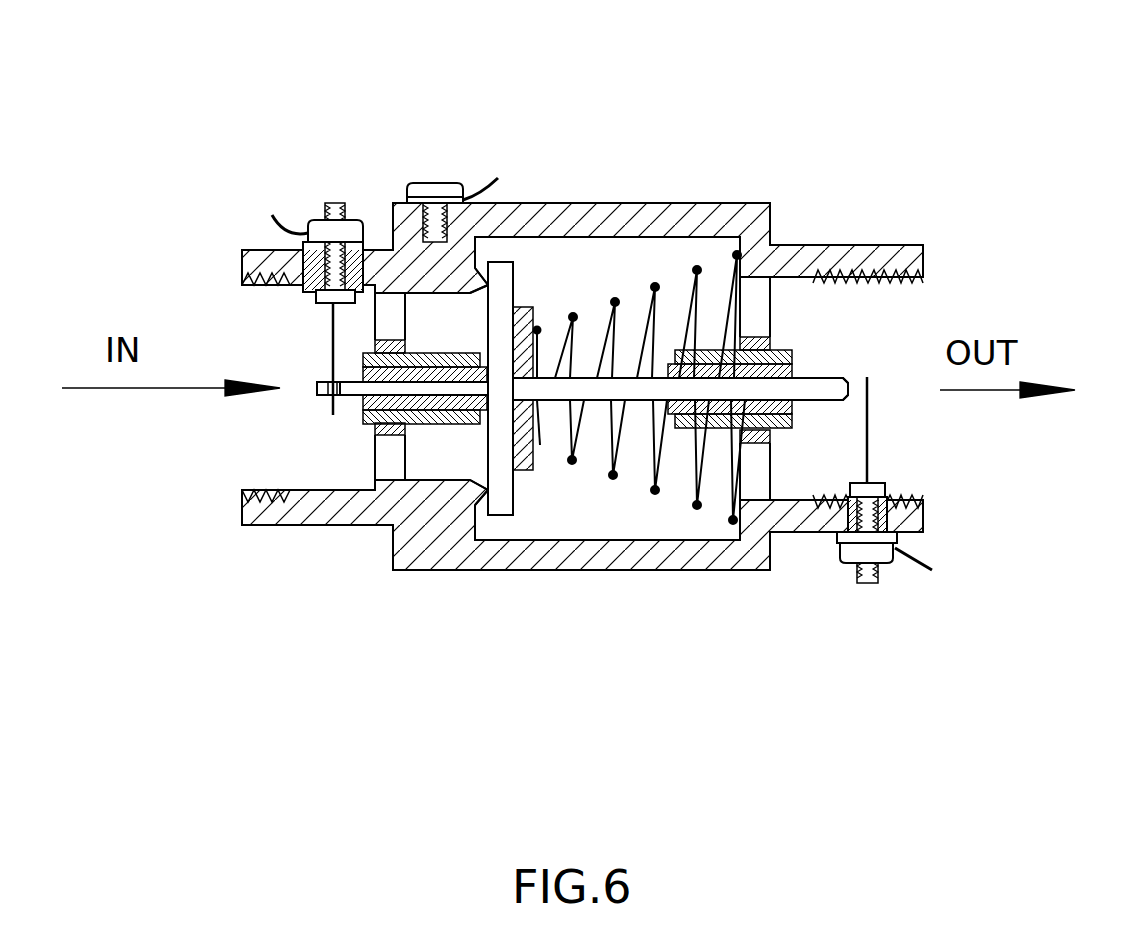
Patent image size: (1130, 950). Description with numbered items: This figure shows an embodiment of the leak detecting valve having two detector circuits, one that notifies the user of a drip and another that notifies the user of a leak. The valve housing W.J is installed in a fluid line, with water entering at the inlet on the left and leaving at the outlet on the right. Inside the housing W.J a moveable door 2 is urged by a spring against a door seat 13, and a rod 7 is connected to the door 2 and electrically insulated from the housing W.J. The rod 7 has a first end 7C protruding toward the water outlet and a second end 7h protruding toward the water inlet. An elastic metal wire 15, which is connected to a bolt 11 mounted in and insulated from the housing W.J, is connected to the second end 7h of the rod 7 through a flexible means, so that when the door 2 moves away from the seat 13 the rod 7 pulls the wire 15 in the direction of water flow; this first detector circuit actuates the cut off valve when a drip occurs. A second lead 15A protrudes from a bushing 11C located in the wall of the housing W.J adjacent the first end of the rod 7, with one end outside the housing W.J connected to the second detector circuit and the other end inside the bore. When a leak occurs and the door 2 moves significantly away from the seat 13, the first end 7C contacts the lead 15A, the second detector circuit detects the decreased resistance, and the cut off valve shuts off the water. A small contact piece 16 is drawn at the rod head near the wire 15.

The door 2 is at (553, 298).
The rod 7 is at (582, 259).
The first end of rod 7C is at (921, 260).
The second end of rod 7h is at (191, 451).
The bolt 11 is at (245, 160).
The bushing 11C is at (954, 589).
The door seat 13 is at (584, 521).
The metal wire 15 is at (174, 287).
The second lead 15A is at (998, 482).
The contact 16 is at (237, 523).
The housing W.J is at (582, 456).